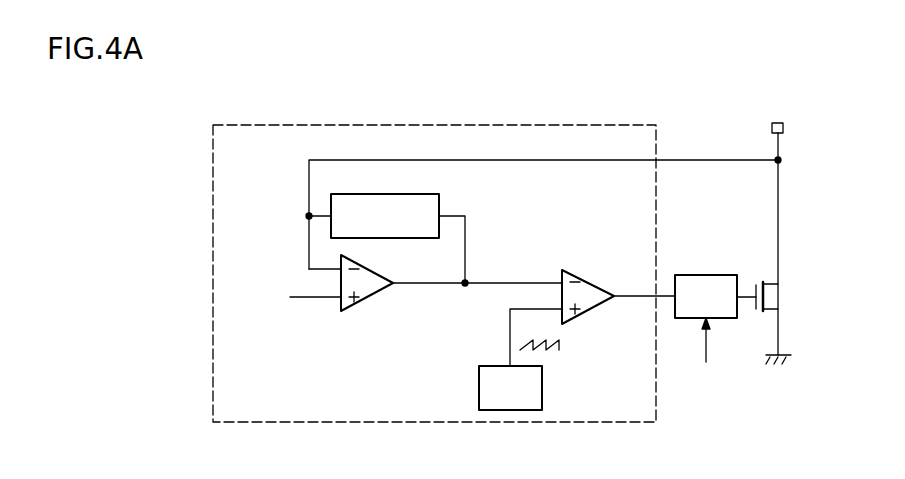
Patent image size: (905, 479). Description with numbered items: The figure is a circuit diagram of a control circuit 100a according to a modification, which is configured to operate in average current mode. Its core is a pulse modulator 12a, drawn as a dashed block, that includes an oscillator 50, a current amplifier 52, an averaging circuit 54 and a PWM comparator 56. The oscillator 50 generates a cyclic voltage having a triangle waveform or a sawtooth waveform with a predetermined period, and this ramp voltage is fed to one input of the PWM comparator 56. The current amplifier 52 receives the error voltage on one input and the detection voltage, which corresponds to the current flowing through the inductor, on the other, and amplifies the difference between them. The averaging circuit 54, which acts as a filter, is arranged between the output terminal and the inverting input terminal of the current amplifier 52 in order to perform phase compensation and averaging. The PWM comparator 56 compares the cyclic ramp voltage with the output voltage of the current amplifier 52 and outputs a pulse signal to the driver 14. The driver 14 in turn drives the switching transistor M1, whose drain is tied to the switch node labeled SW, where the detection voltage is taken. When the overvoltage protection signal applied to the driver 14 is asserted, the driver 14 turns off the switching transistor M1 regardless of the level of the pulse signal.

The control circuit 100a is at (512, 461).
The pulse modulator 12a is at (213, 390).
The averaging circuit 54 is at (362, 194).
The current amplifier 52 is at (374, 302).
The PWM comparator 56 is at (593, 277).
The oscillator 50 is at (479, 392).
The driver 14 is at (717, 275).
The switching transistor M1 is at (784, 292).
The switch terminal SW is at (780, 122).